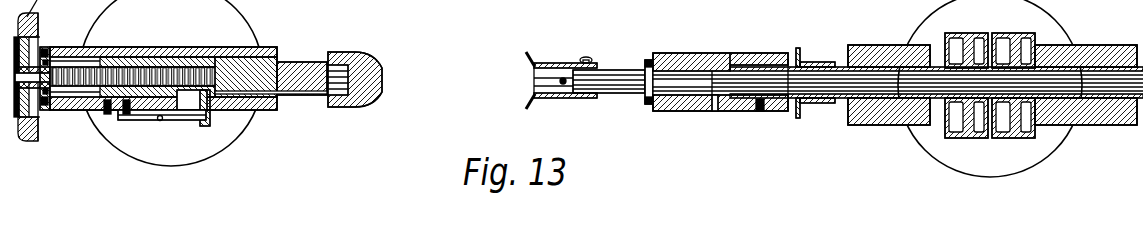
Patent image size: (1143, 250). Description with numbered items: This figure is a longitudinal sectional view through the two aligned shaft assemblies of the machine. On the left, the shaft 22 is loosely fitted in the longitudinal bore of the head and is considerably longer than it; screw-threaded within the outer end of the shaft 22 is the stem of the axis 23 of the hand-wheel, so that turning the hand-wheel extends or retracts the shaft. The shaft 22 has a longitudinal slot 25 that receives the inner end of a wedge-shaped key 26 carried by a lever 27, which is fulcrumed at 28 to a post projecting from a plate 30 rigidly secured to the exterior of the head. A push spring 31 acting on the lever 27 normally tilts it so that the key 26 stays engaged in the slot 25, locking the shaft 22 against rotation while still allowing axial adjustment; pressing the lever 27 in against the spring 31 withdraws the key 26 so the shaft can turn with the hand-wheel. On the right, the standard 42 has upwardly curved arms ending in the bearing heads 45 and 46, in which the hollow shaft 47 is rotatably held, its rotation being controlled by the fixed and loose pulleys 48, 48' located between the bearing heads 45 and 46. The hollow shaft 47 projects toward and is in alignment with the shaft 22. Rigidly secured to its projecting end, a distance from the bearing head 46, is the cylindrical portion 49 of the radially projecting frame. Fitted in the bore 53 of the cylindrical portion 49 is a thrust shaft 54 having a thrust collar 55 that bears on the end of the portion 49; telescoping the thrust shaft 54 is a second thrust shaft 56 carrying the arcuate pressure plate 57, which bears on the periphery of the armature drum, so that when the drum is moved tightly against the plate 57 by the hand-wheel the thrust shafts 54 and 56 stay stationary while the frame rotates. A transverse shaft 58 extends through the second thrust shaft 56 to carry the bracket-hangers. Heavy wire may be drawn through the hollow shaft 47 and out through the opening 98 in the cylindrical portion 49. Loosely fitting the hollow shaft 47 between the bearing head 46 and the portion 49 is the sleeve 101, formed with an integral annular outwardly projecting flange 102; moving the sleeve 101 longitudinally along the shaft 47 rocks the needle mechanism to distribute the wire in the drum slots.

The shaft 22 is at (283, 67).
The axis of the hand-wheel 23 is at (52, 60).
The longitudinal slot 25 is at (294, 97).
The wedge-shaped key 26 is at (213, 115).
The lever 27 is at (190, 122).
The fulcrum 28 is at (160, 123).
The plate 30 is at (100, 113).
The push spring 31 is at (120, 133).
The standard 42 is at (948, 152).
The bearing head 45 is at (1080, 53).
The bearing head 46 is at (870, 50).
The hollow shaft 47 is at (844, 66).
The fixed pulley 48 is at (966, 71).
The loose pulley 48' is at (1017, 75).
The cylindrical portion 49 is at (665, 53).
The bore 53 is at (675, 83).
The thrust shaft 54 is at (623, 90).
The thrust collar 55 is at (648, 102).
The second thrust shaft 56 is at (553, 64).
The pressure plate 57 is at (535, 57).
The transverse shaft 58 is at (553, 100).
The opening 98 is at (718, 106).
The sleeve 101 is at (807, 64).
The annular flange 102 is at (797, 48).